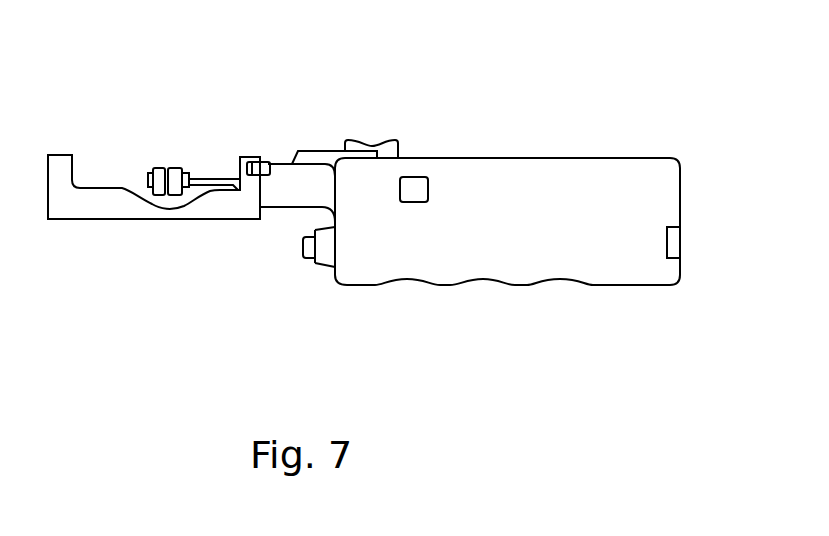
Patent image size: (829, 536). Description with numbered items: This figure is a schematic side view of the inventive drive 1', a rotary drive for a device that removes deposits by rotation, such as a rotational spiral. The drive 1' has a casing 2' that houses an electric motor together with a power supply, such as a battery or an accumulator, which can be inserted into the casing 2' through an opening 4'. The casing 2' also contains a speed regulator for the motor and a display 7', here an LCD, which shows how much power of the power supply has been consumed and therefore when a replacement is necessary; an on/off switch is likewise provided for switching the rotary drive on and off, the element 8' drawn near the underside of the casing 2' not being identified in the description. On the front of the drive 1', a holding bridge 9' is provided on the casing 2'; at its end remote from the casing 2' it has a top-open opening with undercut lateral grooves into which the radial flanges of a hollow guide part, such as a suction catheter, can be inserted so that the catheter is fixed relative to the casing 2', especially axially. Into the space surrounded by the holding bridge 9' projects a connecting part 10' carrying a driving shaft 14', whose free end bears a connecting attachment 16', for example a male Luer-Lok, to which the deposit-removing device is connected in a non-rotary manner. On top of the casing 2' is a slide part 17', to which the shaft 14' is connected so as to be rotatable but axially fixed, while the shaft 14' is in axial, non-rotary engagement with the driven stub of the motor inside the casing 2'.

The drive 1' is at (364, 148).
The casing 2' is at (526, 183).
The opening 4' is at (714, 288).
The display 7' is at (441, 120).
The release button 8' is at (313, 301).
The holding bridge 9' is at (154, 232).
The connecting part 10' is at (250, 109).
The driving shaft 14' is at (197, 120).
The connecting attachment 16' is at (133, 122).
The slide part 17' is at (374, 98).